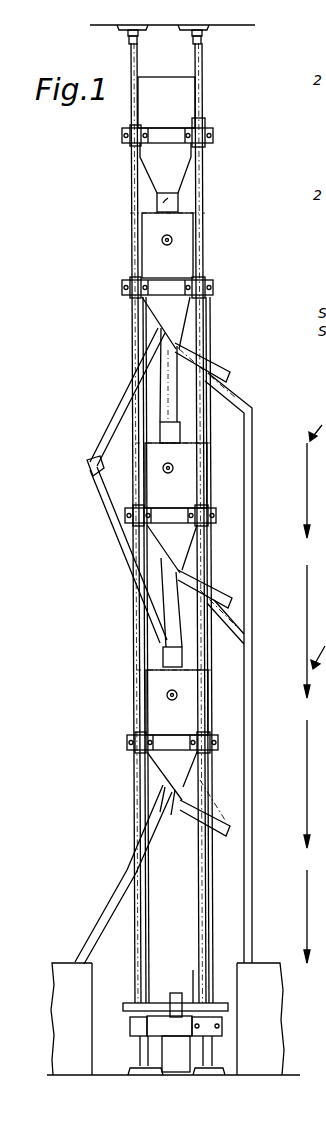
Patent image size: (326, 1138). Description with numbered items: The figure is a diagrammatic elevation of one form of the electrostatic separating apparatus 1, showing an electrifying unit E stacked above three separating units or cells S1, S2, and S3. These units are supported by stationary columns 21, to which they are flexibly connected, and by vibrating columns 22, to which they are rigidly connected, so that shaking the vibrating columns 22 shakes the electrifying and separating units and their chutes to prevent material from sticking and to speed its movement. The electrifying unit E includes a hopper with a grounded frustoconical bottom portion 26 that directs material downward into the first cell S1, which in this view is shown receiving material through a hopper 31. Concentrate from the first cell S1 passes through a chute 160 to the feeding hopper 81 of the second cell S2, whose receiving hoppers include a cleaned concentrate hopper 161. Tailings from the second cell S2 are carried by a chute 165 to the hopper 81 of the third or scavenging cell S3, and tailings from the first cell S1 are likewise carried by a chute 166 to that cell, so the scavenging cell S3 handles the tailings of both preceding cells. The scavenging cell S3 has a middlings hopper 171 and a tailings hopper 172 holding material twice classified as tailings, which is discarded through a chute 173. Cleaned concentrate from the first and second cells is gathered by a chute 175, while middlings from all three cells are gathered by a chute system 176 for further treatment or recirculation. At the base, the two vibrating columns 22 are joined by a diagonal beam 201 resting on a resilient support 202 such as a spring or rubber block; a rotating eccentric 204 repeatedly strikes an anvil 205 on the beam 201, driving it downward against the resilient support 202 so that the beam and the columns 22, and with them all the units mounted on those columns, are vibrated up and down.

The direction of material flow 1 is at (314, 694).
The stationary columns 21 is at (139, 62).
The vibrating columns 22 is at (130, 195).
The frustoconical bottom portion 26 is at (165, 177).
The distributing hopper 31 is at (166, 323).
The feeding hopper 81 is at (172, 433).
The chute 160 is at (172, 408).
The cleaned concentrate hopper 161 is at (172, 586).
The chute 165 is at (170, 618).
The chute 166 is at (107, 443).
The middlings hopper 171 is at (172, 783).
The tailings hopper 172 is at (167, 797).
The chute 173 is at (112, 908).
The chute 175 is at (322, 412).
The chute system 176 is at (224, 366).
The diagonal beam 201 is at (131, 1031).
The resilient support 202 is at (178, 1058).
The eccentric 204 is at (176, 995).
The anvil 205 is at (180, 977).
The electrifying unit E is at (166, 102).
The first separating unit S1 is at (167, 245).
The second separating unit S2 is at (172, 475).
The third or scavenging separating unit S3 is at (174, 702).